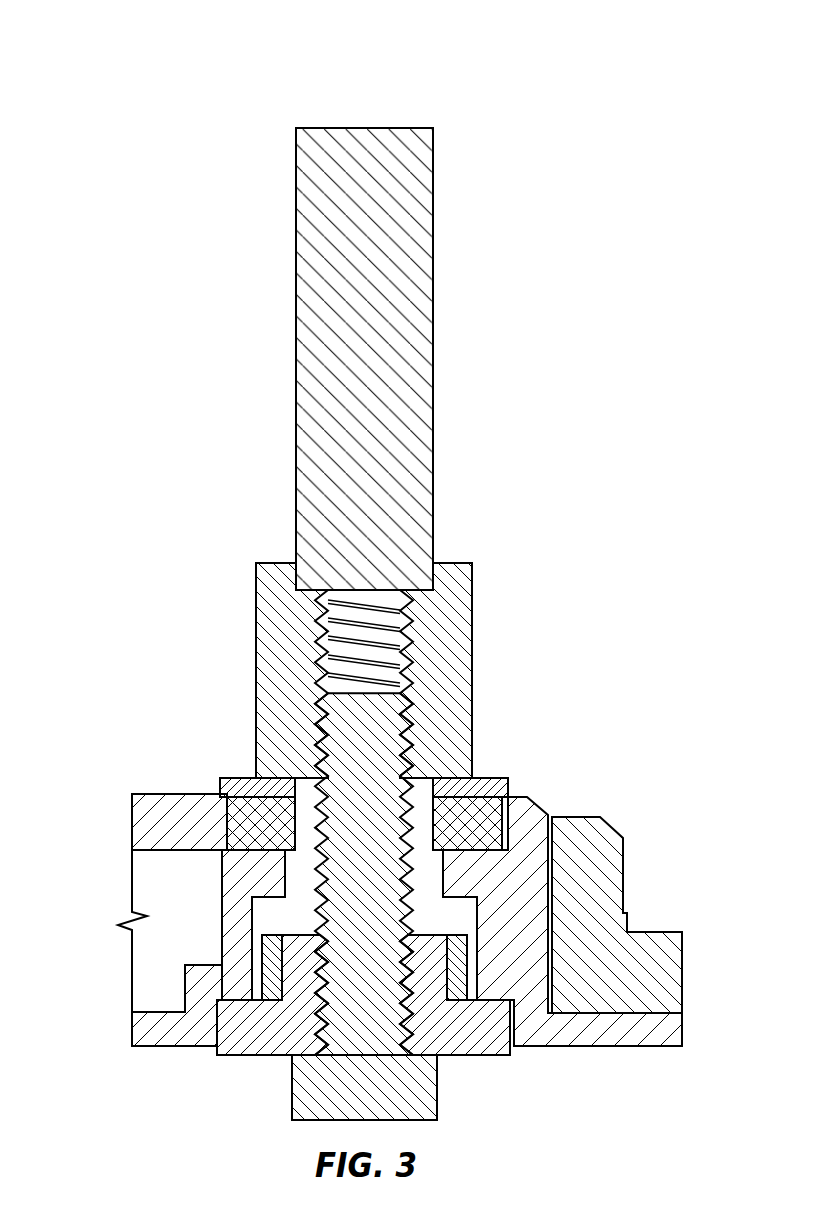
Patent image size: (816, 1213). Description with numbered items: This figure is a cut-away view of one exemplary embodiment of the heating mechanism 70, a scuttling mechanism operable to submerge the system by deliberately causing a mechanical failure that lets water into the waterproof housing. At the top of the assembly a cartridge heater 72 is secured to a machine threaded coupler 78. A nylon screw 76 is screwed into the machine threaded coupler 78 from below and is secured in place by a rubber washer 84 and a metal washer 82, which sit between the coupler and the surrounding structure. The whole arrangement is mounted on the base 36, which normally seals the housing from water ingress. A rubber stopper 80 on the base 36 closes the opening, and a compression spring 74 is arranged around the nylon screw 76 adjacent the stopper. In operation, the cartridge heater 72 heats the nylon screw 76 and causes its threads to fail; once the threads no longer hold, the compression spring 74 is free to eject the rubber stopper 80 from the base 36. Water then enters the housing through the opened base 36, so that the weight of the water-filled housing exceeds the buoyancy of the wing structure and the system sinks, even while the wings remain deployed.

The heating mechanism 70 is at (618, 96).
The cartridge heater 72 is at (433, 332).
The compression spring 74 is at (272, 955).
The nylon screw 76 is at (340, 750).
The machine threaded coupler 78 is at (473, 620).
The rubber stopper 80 is at (263, 1055).
The metal washer 82 is at (237, 825).
The rubber washer 84 is at (235, 790).
The base 36 is at (130, 1030).